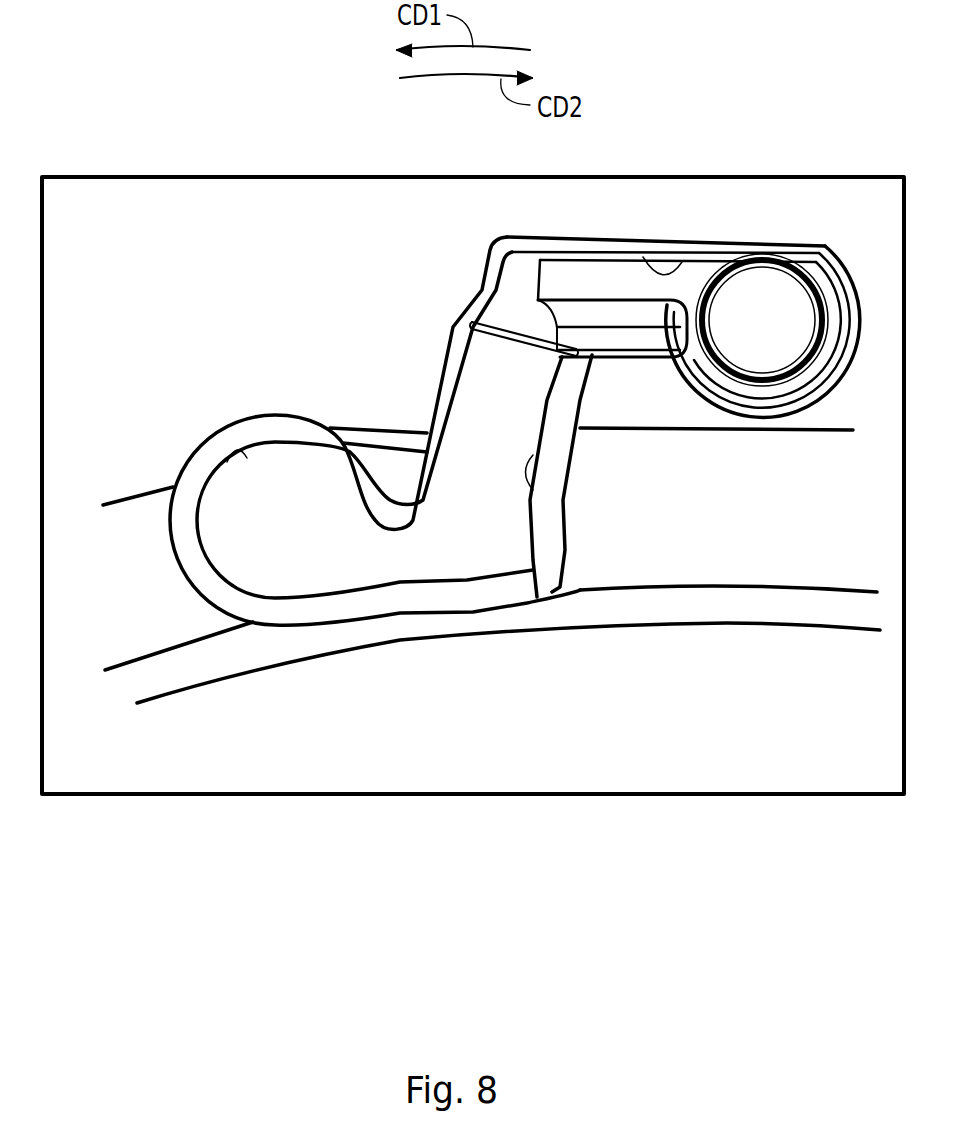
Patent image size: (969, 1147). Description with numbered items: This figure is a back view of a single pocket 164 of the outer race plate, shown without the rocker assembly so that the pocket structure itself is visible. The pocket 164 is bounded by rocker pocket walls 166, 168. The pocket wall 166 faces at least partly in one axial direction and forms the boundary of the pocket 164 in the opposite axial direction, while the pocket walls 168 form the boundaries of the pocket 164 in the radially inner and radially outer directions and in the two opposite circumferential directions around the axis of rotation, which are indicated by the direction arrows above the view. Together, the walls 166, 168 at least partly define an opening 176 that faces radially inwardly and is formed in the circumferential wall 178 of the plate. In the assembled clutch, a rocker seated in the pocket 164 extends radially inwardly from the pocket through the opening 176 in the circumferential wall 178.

The pocket 164 is at (314, 406).
The rocker pocket wall 166 is at (233, 535).
The rocker pocket wall 168 is at (220, 462).
The opening 176 is at (407, 613).
The circumferential wall 178 is at (191, 704).